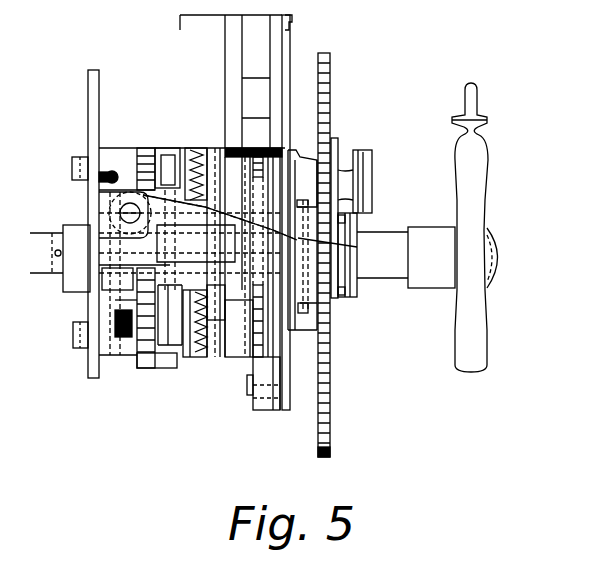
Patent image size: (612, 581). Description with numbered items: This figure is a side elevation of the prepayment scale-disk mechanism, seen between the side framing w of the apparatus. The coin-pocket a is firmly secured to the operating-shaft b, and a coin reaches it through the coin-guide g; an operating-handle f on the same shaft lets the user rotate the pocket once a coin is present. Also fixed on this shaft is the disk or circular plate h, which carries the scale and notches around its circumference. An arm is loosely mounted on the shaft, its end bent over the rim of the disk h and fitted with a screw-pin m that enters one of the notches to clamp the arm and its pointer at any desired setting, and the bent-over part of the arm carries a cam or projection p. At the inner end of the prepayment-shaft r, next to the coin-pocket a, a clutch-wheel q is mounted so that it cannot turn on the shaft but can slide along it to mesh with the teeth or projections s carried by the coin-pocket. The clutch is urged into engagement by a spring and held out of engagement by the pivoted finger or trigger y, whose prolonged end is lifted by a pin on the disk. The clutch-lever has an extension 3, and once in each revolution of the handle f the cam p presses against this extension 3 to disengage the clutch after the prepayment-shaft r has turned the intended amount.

The side framing w is at (97, 117).
The coin-guide g is at (230, 55).
The cam or projection p is at (295, 145).
The disk or circular plate h is at (342, 402).
The screw-pin m is at (368, 158).
The operating-handle f is at (480, 140).
The operating-shaft b is at (406, 257).
The extension of the clutch-lever 3 is at (253, 231).
The pivoted finger or trigger y is at (188, 190).
The clutch-wheel q is at (190, 354).
The teeth or projections s is at (214, 302).
The coin-pocket a is at (238, 325).
The prepayment-shaft r is at (57, 270).